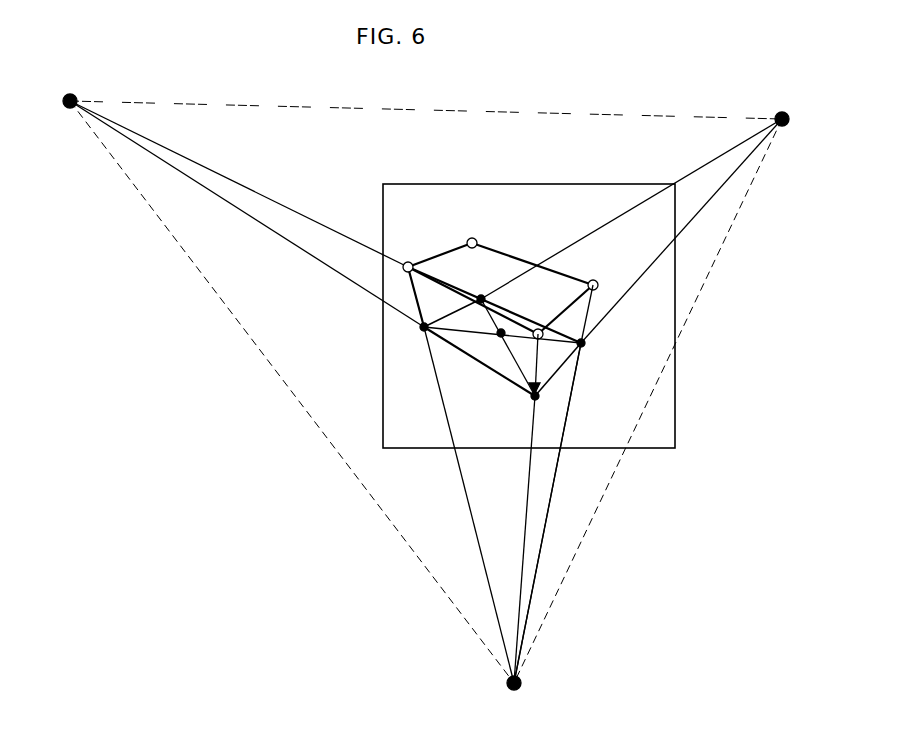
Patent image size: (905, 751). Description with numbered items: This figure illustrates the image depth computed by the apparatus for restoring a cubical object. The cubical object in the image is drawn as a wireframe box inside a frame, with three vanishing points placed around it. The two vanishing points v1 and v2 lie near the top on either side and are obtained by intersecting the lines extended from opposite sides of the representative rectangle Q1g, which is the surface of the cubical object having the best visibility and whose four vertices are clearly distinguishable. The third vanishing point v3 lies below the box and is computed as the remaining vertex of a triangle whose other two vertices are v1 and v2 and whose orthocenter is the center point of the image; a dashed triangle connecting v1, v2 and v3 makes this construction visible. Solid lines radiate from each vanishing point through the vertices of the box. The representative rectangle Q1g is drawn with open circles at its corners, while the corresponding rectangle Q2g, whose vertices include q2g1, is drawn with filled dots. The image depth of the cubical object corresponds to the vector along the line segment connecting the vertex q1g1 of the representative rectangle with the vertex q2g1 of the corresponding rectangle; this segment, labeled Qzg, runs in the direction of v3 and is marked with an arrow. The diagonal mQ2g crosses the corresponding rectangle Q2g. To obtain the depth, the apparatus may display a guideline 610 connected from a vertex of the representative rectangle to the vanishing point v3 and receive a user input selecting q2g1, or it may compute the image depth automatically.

The vanishing point v1 is at (797, 111).
The vanishing point v2 is at (58, 95).
The vanishing point v3 is at (517, 699).
The representative rectangle Q1g is at (497, 260).
The corresponding rectangle Q2g is at (557, 356).
The diagonal of the second quadrilateral mQ2g is at (497, 334).
The vertex of the representative rectangle q1g1 is at (501, 337).
The vertex of the corresponding rectangle q2g1 is at (533, 397).
The vertical edge of the cube Qzg is at (537, 368).
The guideline 610 is at (525, 548).